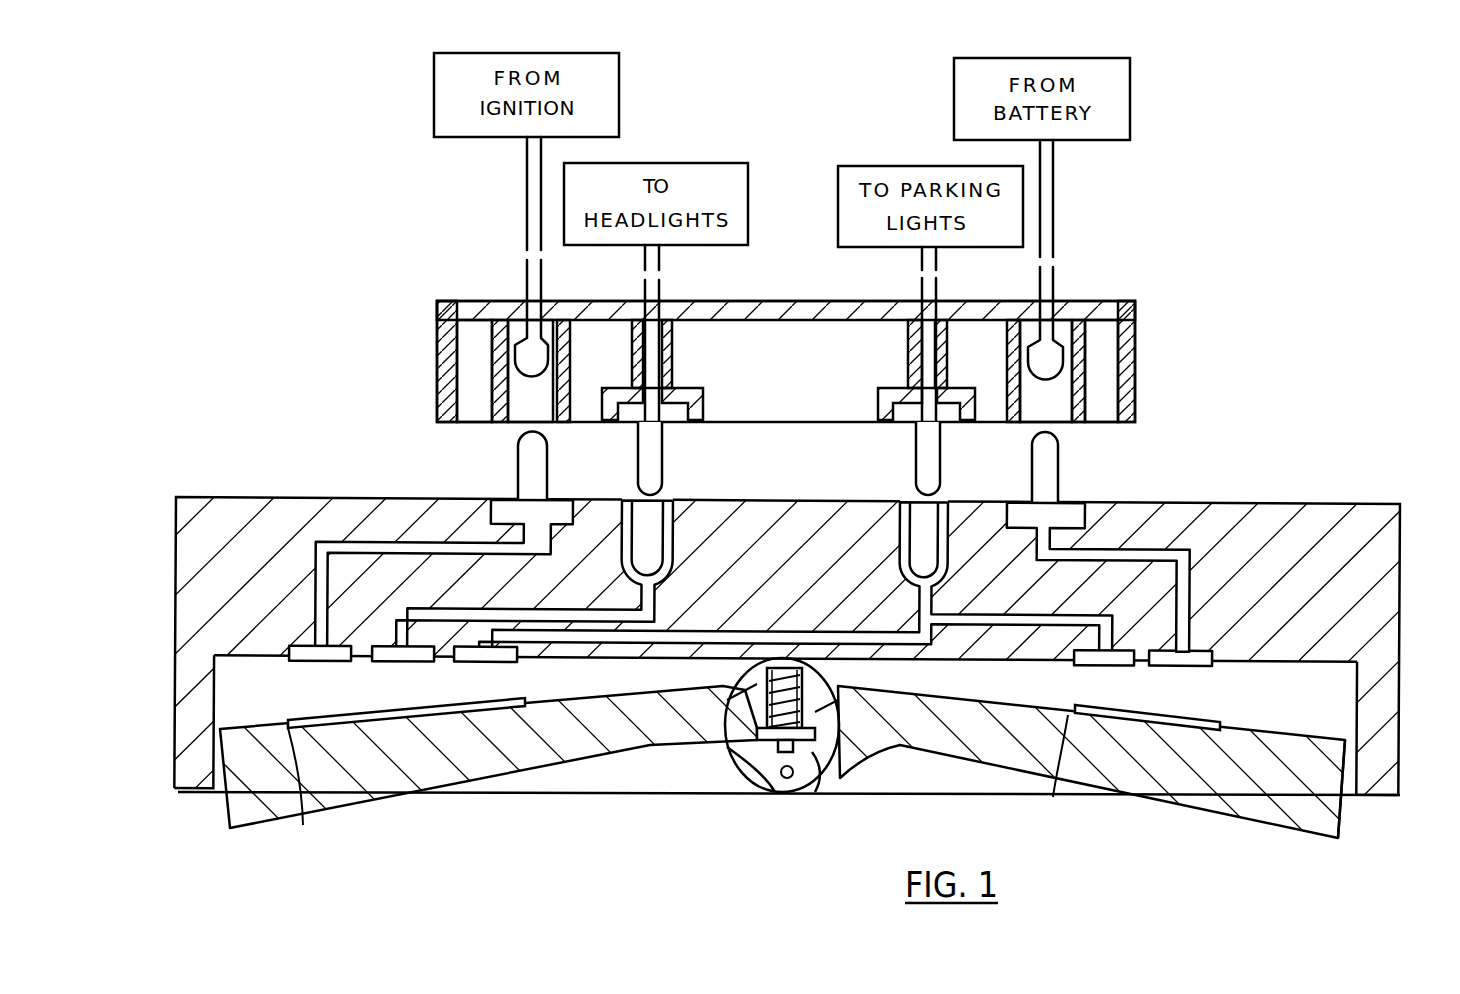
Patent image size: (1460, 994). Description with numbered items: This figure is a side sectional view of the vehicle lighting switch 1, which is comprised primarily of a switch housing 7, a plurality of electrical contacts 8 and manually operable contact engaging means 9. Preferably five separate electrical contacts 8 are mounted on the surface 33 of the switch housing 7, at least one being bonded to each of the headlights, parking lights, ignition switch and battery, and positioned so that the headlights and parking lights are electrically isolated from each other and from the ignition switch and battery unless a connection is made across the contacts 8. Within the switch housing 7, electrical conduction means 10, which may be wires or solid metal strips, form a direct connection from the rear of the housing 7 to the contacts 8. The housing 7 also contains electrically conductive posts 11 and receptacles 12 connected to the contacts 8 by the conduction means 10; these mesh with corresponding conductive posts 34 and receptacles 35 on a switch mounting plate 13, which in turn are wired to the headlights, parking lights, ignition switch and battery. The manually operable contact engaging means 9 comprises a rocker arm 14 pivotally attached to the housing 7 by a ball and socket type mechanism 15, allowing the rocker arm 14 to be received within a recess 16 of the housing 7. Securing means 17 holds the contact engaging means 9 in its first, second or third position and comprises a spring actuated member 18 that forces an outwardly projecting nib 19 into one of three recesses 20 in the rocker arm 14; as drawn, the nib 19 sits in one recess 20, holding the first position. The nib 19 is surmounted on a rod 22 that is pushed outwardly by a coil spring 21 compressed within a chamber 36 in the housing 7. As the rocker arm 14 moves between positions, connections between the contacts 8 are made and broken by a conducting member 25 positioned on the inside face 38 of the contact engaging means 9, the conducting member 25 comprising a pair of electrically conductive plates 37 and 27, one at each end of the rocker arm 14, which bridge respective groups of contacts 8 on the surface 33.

The lighting switch 1 is at (1313, 430).
The switch housing 7 is at (1388, 543).
The electrical contacts 8 is at (337, 662).
The manually operable contact engaging means 9 is at (988, 747).
The electrical conduction means 10 is at (1190, 557).
The posts 11 is at (526, 449).
The receptacles 12 is at (642, 513).
The switch mounting plate 13 is at (1145, 308).
The rocker arm 14 is at (1260, 828).
The ball and socket type mechanism 15 is at (828, 682).
The recess 16 is at (227, 681).
The securing means 17 is at (757, 745).
The spring actuated member 18 is at (745, 690).
The nib 19 is at (790, 752).
The recesses 20 is at (812, 752).
The coil spring 21 is at (833, 710).
The rod 22 is at (712, 747).
The conducting member 25 is at (1170, 722).
The electrically conductive plate 27 is at (1053, 797).
The surface 33 is at (1315, 665).
The posts 34 is at (662, 463).
The receptacles 35 is at (1052, 358).
The chamber 36 is at (787, 666).
The electrically conductive plate 37 is at (303, 825).
The inside face 38 is at (582, 748).